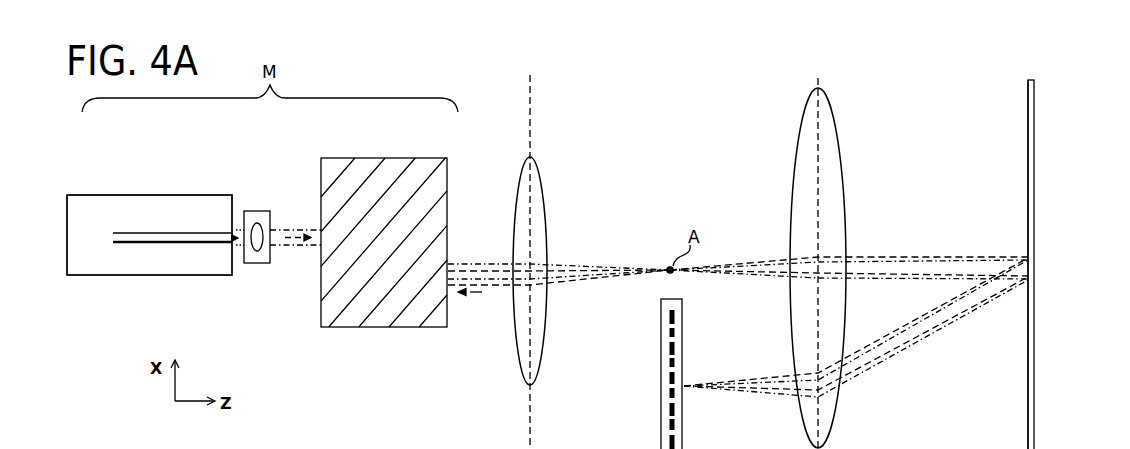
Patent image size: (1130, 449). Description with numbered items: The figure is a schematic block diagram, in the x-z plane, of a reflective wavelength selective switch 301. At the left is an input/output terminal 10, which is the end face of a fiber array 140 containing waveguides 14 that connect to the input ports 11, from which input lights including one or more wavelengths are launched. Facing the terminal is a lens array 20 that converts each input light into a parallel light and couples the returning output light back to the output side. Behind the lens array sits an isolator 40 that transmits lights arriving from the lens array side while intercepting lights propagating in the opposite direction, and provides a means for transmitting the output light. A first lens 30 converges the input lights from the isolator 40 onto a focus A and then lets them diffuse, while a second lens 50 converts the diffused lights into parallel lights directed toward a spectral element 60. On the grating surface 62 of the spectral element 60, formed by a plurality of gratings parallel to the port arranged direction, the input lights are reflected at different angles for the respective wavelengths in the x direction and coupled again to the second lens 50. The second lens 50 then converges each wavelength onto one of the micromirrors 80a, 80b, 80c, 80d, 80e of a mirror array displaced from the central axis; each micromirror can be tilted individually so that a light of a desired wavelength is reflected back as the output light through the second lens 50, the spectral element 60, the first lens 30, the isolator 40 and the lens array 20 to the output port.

The input/output terminal 10 is at (232, 270).
The fiber array 140 is at (162, 194).
The waveguides 14 is at (126, 232).
The input ports 11 is at (231, 235).
The lens array 20 is at (260, 210).
The isolator 40 is at (393, 157).
The first lens 30 is at (536, 158).
The second lens 50 is at (822, 88).
The spectral element 60 is at (1028, 117).
The grating surface 62 is at (1027, 143).
The micromirror 80a is at (668, 327).
The micromirror 80b is at (668, 357).
The micromirror 80c is at (668, 386).
The micromirror 80d is at (668, 418).
The micromirror 80e is at (668, 448).
The wavelength selective switch 301 is at (1085, 80).